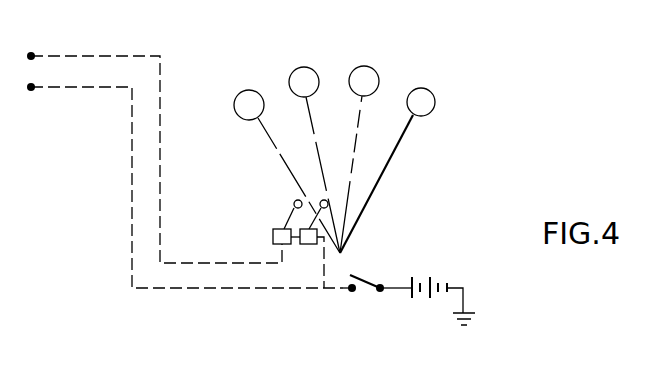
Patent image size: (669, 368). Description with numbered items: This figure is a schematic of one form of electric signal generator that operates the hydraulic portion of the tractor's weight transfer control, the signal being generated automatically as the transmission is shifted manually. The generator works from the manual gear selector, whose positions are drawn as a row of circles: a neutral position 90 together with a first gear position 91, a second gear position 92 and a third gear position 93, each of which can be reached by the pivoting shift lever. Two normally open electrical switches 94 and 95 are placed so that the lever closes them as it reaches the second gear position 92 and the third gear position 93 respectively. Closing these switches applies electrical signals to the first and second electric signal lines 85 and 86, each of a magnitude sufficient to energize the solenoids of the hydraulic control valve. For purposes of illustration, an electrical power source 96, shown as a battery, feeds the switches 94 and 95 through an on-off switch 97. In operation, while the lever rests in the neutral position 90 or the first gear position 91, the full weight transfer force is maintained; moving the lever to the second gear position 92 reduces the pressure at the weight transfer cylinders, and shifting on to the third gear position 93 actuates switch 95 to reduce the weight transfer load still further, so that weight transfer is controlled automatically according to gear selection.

The first electric signal line 85 is at (82, 56).
The second electric signal line 86 is at (82, 88).
The neutral position 90 is at (435, 101).
The first gear position 91 is at (373, 68).
The second gear position 92 is at (314, 70).
The third gear position 93 is at (257, 91).
The normally open electrical switch 94 is at (309, 244).
The normally open electrical switch 95 is at (273, 236).
The electrical power source 96 is at (425, 285).
The on-off switch 97 is at (365, 282).